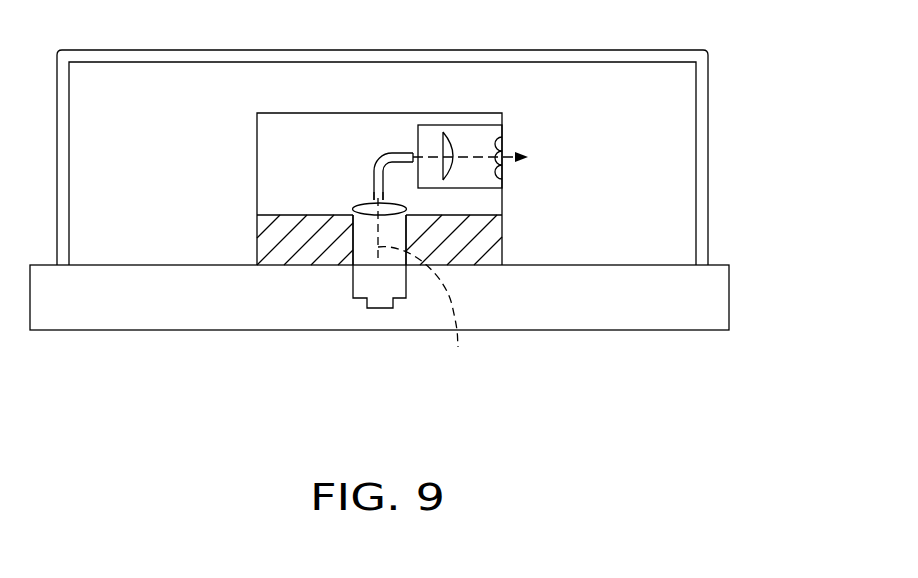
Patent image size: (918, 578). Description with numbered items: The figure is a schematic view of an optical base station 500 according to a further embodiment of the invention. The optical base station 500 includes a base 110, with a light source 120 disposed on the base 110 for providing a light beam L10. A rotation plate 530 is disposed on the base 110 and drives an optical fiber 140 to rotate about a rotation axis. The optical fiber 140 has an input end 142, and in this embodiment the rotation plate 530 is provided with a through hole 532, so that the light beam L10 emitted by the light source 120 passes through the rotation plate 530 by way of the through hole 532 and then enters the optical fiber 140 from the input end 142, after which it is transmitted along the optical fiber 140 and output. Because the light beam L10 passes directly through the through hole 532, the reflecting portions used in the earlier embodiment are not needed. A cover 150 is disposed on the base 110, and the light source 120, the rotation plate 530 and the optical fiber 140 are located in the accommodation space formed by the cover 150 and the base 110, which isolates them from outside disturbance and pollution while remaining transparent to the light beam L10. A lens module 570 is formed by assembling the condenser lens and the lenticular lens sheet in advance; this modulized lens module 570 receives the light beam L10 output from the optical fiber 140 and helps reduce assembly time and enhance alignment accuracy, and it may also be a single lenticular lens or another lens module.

The optical base station 500 is at (409, 238).
The base 110 is at (717, 297).
The light source 120 is at (372, 310).
The optical fiber 140 is at (378, 160).
The input end 142 is at (370, 199).
The cover 150 is at (703, 215).
The rotation plate 530 is at (483, 255).
The through hole 532 is at (362, 235).
The lens module 570 is at (470, 125).
The light beam L10 is at (512, 163).